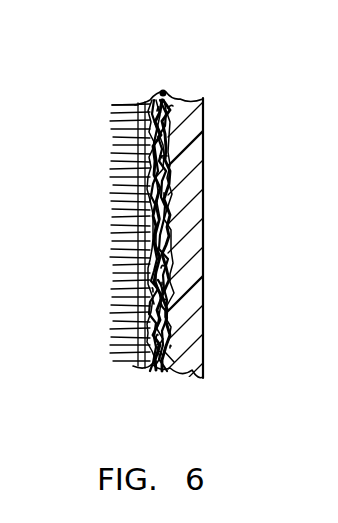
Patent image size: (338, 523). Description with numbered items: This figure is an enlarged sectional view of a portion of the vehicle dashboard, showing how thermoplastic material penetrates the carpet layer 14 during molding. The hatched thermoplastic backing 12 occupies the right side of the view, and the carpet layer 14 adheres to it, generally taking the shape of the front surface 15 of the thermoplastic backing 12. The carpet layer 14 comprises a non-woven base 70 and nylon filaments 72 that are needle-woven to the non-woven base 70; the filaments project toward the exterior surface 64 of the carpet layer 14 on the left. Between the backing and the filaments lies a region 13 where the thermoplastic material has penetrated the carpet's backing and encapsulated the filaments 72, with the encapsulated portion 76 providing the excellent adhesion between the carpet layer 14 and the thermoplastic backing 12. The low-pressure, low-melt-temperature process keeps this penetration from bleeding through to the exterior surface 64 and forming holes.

The thermoplastic backing 12 is at (194, 142).
The fibrous surface layer 13 is at (205, 180).
The carpet layer 14 is at (150, 392).
The front surface 15 is at (173, 70).
The exterior surface 64 is at (126, 96).
The non-woven base 70 is at (128, 184).
The nylon filaments 72 is at (111, 330).
The entangled fibers 76 is at (170, 297).